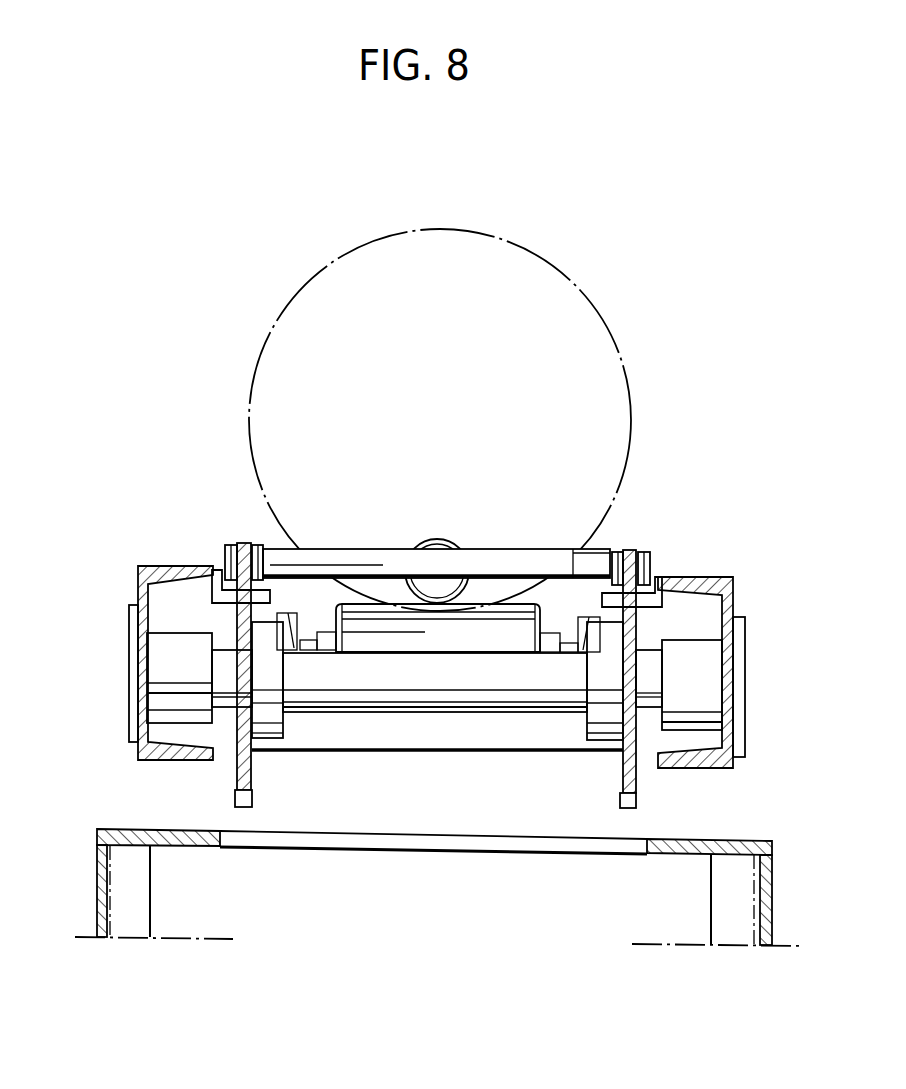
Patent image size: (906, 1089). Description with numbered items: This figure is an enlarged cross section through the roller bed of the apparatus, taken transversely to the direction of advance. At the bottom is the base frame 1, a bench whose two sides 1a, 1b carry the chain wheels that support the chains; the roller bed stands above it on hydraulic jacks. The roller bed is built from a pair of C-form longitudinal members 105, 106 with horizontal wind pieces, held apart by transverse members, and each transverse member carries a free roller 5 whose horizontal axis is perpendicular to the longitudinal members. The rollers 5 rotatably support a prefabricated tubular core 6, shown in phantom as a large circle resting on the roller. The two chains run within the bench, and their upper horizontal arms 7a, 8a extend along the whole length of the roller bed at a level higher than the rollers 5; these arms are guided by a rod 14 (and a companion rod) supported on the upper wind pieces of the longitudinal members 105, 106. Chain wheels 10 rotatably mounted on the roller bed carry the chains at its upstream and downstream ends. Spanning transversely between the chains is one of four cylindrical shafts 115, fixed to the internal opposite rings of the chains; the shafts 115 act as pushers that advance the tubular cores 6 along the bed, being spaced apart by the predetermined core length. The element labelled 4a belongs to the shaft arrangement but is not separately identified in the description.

The base frame 1 is at (653, 853).
The side of the bench 1a is at (102, 898).
The side of the bench 1b is at (767, 923).
The shaft 4a is at (553, 580).
The roller 5 is at (497, 633).
The tubular core 6 is at (575, 256).
The upper horizontal arm of the chain 7a is at (238, 540).
The upper horizontal arm of the chain 8a is at (634, 540).
The chain wheel 10 is at (251, 777).
The rod 14 is at (270, 597).
The longitudinal member 105 is at (140, 599).
The longitudinal member 106 is at (733, 610).
The cylindrical shaft 115 is at (597, 560).